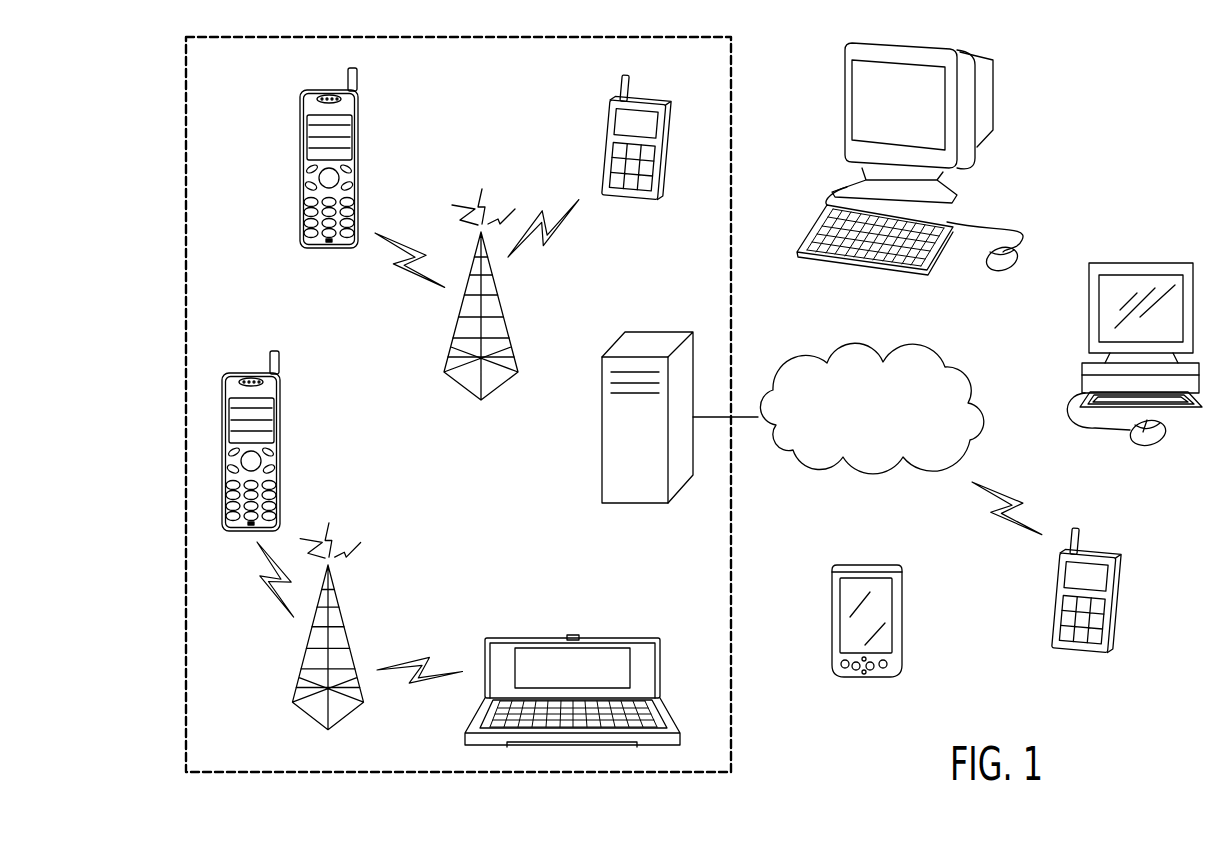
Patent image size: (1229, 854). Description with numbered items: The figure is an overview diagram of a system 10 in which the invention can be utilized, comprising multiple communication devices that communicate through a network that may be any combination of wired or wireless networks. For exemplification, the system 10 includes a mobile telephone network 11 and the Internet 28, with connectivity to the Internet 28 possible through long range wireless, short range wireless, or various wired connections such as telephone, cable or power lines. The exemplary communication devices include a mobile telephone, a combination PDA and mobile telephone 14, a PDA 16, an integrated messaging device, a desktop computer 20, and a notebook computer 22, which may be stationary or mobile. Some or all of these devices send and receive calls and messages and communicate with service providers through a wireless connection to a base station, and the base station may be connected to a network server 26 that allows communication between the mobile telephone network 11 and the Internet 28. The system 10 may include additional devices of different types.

The system 10 is at (1186, 512).
The mobile telephone network 11 is at (226, 78).
The combination PDA and mobile telephone 14 is at (572, 636).
The PDA 16 is at (902, 617).
The desktop computer 20 is at (993, 95).
The notebook computer 22 is at (1140, 262).
The network server 26 is at (602, 432).
The Internet 28 is at (913, 345).